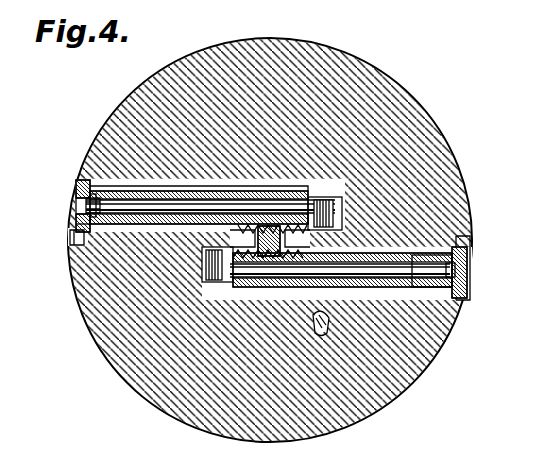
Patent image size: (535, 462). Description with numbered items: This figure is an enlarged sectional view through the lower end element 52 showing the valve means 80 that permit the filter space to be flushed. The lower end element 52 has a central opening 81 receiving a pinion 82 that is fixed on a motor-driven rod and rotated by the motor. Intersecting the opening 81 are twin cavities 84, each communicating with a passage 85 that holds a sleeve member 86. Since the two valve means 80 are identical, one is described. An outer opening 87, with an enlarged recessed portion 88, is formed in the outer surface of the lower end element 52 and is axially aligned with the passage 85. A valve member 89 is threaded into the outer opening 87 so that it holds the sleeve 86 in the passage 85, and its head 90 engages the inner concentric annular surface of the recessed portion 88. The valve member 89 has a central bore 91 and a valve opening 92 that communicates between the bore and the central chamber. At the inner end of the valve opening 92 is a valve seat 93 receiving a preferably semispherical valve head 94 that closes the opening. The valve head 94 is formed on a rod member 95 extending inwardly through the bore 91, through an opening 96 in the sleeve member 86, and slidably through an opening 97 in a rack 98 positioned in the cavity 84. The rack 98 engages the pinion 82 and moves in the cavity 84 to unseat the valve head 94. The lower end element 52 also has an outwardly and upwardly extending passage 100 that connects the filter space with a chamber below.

The lower end element 52 is at (393, 113).
The valve means 80 is at (75, 158).
The central opening 81 is at (323, 197).
The pinion 82 is at (292, 214).
The twin cavities 84 is at (342, 203).
The passage 85 is at (150, 188).
The sleeve member 86 is at (243, 200).
The outer opening 87 is at (92, 183).
The enlarged recessed portion 88 is at (70, 240).
The valve member 89 is at (97, 235).
The head 90 is at (78, 227).
The central bore 91 is at (110, 187).
The valve opening 92 is at (88, 206).
The valve seat 93 is at (80, 180).
The valve head 94 is at (78, 192).
The rod member 95 is at (112, 230).
The opening 96 is at (140, 235).
The opening 97 is at (258, 222).
The rack 98 is at (276, 222).
The passage 100 is at (325, 333).